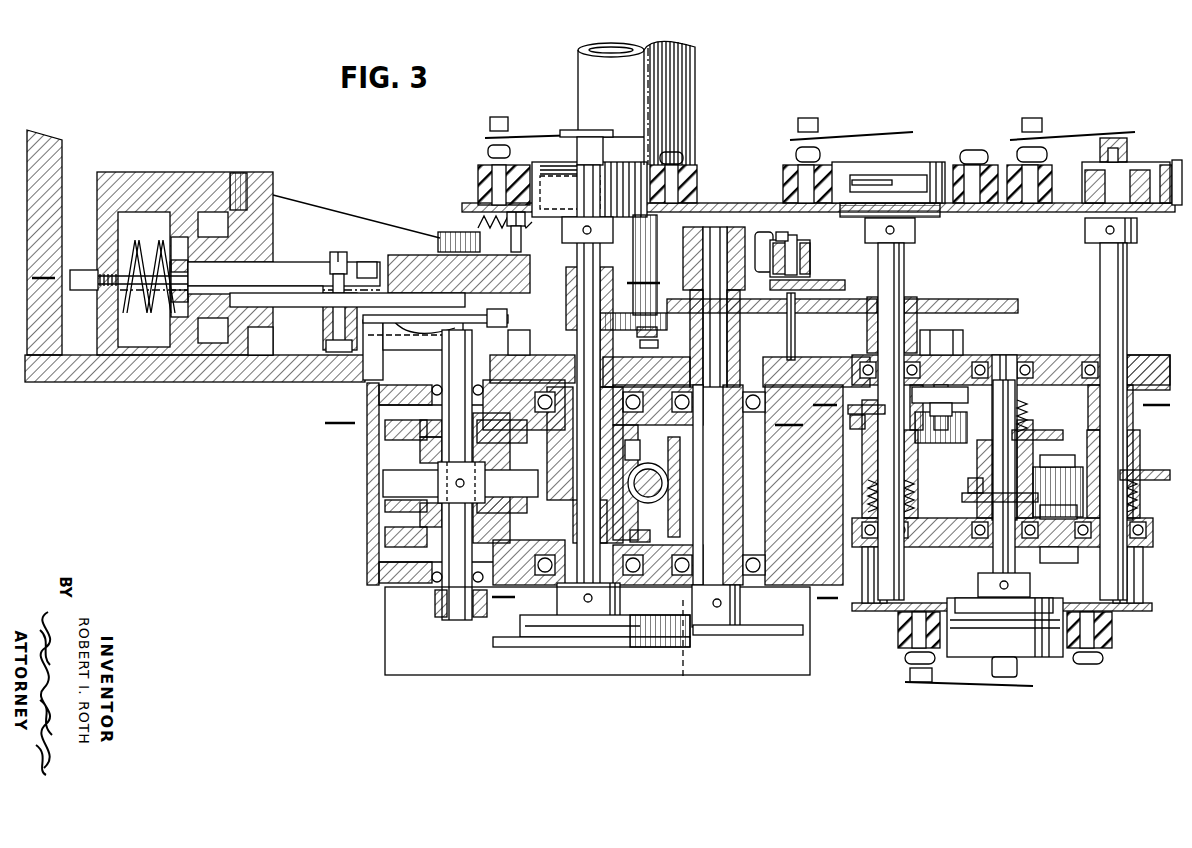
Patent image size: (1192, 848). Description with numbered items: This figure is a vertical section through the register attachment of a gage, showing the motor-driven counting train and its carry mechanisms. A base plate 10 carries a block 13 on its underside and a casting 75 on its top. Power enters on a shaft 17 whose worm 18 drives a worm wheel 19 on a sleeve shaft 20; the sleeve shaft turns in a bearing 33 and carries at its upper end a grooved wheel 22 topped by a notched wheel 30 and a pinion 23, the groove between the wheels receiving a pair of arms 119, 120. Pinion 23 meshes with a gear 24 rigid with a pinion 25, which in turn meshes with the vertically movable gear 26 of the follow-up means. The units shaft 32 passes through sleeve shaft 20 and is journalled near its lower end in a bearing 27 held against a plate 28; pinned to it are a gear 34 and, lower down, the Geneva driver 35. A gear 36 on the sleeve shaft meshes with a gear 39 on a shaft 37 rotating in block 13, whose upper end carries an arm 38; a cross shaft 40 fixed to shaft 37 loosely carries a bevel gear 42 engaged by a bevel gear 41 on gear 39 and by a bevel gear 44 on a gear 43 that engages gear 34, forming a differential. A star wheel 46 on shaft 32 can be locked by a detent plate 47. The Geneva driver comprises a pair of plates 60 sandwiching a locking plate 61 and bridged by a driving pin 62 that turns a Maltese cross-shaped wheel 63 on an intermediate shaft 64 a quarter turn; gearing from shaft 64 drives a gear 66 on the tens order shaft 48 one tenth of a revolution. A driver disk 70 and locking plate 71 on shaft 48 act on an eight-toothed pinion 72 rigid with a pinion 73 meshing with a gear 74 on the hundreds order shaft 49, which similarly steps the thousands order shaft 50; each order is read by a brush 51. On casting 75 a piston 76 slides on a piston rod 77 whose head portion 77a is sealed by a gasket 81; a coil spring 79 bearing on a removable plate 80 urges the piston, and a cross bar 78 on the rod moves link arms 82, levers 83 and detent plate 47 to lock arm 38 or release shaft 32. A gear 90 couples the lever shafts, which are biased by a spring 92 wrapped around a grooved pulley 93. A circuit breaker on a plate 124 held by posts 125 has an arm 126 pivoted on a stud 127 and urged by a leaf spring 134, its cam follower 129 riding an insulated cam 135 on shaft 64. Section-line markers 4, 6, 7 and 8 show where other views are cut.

The section line 4- 4 is at (1154, 396).
The section line 6- 6 is at (828, 595).
The section line 7- 7 is at (790, 422).
The section line 8- 8 is at (645, 280).
The base plate 10 is at (215, 380).
The block 13 is at (367, 541).
The shaft 17 is at (645, 501).
The worm 18 is at (662, 498).
The worm wheel 19 is at (557, 500).
The sleeve shaft 20 is at (570, 448).
The grooved wheel 22 is at (656, 348).
The pinion 23 is at (600, 319).
The gear 24 is at (657, 334).
The pinion 25 is at (660, 268).
The gear 26 is at (700, 209).
The bearing 27 is at (535, 562).
The plate 28 is at (430, 591).
The notched wheel 30 is at (523, 333).
The units shaft 32 is at (577, 252).
The bearing 33 is at (490, 431).
The gear 34 is at (650, 537).
The Geneva driver 35 is at (555, 656).
The gear 36 is at (632, 441).
The shaft 37 is at (450, 616).
The arm 38 is at (386, 346).
The gear 39 is at (392, 433).
The cross shaft 40 is at (395, 497).
The bevel gear 41 is at (420, 452).
The bevel gear 42 is at (400, 484).
The gear 43 is at (395, 545).
The bevel gear 44 is at (385, 537).
The star wheel 46 is at (566, 292).
The detent plate 47 is at (414, 262).
The tens order shaft 48 is at (906, 282).
The hundreds order shaft 49 is at (993, 563).
The thousands order shaft 50 is at (1100, 270).
The brush 51 is at (910, 208).
The plates 60 is at (493, 642).
The locking plate 61 is at (596, 632).
The driving pin 62 is at (684, 679).
The Maltese cross-shaped wheel 63 is at (755, 638).
The intermediate shaft 64 is at (700, 484).
The gear 66 is at (825, 314).
The driver disk 70 is at (968, 483).
The locking plate 71 is at (962, 498).
The eight-toothed pinion 72 is at (952, 421).
The pinion 73 is at (950, 444).
The gear 74 is at (1040, 430).
The casting 75 is at (175, 176).
The piston 76 is at (171, 233).
The piston rod 77 is at (300, 263).
The head portion 77a is at (192, 286).
The cross bar 78 is at (325, 310).
The coil spring 79 is at (135, 314).
The removable plate 80 is at (97, 202).
The gasket 81 is at (198, 258).
The link arms 82 is at (383, 293).
The levers 83 is at (456, 324).
The gear 90 is at (480, 243).
The spring 92 is at (524, 233).
The grooved pulley 93 is at (452, 232).
The arm 119 is at (733, 344).
The arm 120 is at (520, 362).
The plate 124 is at (845, 286).
The posts 125 is at (795, 344).
The arm 126 is at (810, 268).
The stud 127 is at (797, 250).
The cam follower 129 is at (780, 238).
The leaf spring 134 is at (805, 258).
The insulated cam 135 is at (766, 240).